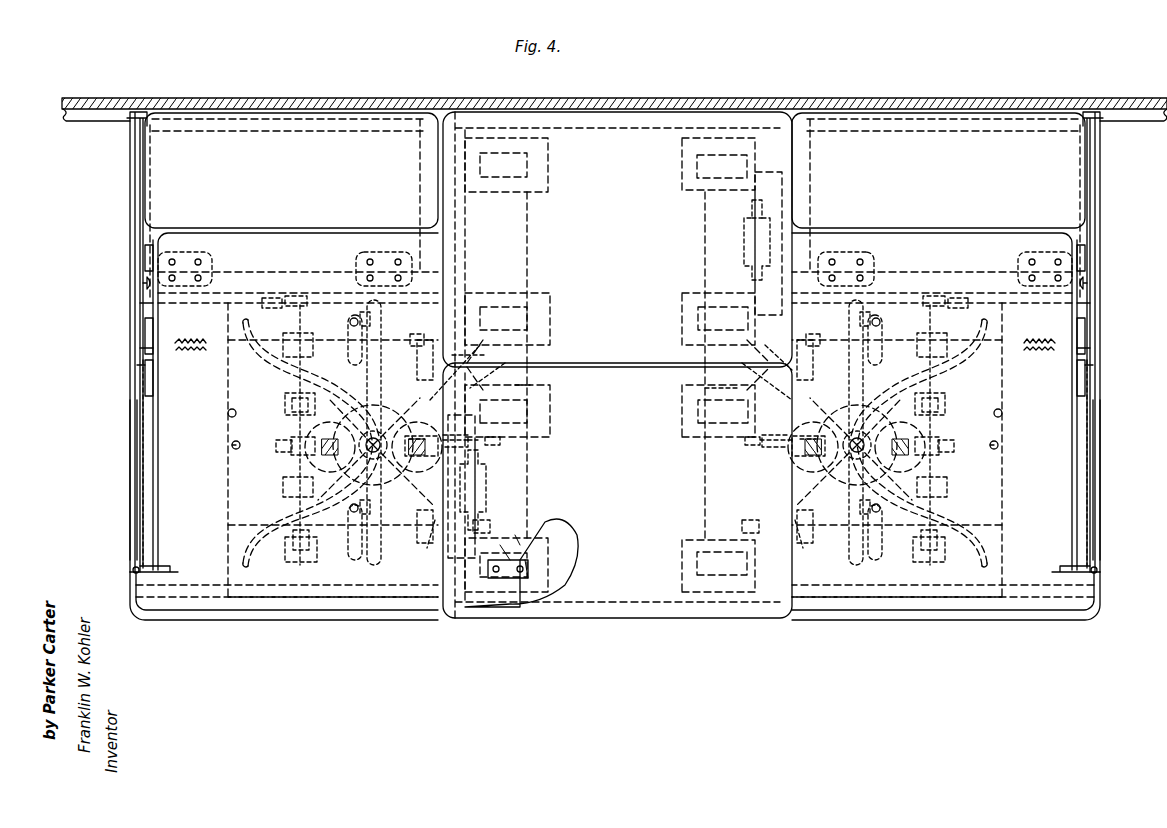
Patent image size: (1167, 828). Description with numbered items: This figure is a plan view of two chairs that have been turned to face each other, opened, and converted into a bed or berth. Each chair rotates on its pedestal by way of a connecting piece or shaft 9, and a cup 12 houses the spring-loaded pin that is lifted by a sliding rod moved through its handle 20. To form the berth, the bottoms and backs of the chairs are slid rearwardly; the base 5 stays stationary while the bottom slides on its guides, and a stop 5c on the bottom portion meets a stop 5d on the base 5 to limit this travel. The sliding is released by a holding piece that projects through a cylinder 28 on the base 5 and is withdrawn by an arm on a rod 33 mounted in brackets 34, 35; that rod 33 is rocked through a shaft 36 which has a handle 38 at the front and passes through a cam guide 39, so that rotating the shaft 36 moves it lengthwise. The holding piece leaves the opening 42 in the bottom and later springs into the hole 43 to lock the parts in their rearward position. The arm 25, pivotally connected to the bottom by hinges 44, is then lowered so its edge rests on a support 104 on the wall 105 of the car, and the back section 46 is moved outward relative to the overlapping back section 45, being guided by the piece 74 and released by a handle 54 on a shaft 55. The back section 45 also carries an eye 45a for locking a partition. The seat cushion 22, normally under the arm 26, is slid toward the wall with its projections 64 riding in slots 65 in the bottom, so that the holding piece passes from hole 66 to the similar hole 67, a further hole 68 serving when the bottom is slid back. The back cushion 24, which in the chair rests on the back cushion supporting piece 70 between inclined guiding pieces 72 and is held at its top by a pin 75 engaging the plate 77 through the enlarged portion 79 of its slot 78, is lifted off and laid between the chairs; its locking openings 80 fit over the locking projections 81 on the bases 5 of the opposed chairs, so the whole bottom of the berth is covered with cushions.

The base 5 is at (527, 382).
The stop 5c is at (295, 296).
The stop 5d is at (268, 298).
The connecting piece or shaft 9 is at (375, 440).
The cup 12 is at (460, 435).
The handle 20 is at (500, 442).
The seat cushion 22 is at (305, 236).
The back cushion 24 is at (617, 365).
The arm 25 is at (615, 206).
The arm 26 is at (258, 612).
The cylinder 28 is at (300, 457).
The rod 33 is at (292, 440).
The bracket 34 is at (290, 402).
The bracket 35 is at (288, 548).
The shaft 36 is at (330, 540).
The handle 38 is at (490, 525).
The cam guide 39 is at (430, 535).
The opening 42 is at (610, 476).
The hole 43 is at (685, 429).
The hinge 44 is at (208, 262).
The back section 45 is at (130, 428).
The eye 45a is at (140, 570).
The back section 46 is at (132, 218).
The handle 54 is at (418, 340).
The shaft 55 is at (205, 345).
The projection 64 is at (350, 322).
The slot 65 is at (348, 365).
The hole 66 is at (228, 413).
The hole 67 is at (232, 445).
The hole 68 is at (340, 440).
The back cushion supporting piece 70 is at (145, 389).
The guiding piece 72 is at (148, 259).
The piece 74 is at (140, 464).
The pin 75 is at (145, 285).
The plate 77 is at (782, 186).
The slot 78 is at (752, 210).
The enlarged portion 79 is at (752, 240).
The locking opening 80 is at (527, 165).
The locking projection 81 is at (520, 310).
The support 104 is at (90, 124).
The wall 105 is at (830, 98).